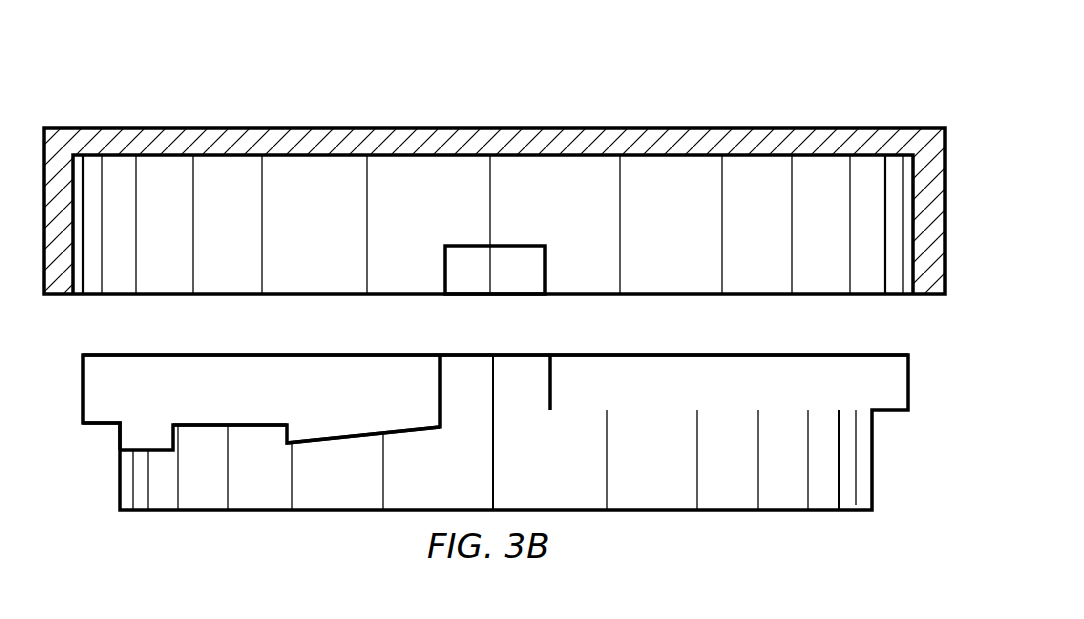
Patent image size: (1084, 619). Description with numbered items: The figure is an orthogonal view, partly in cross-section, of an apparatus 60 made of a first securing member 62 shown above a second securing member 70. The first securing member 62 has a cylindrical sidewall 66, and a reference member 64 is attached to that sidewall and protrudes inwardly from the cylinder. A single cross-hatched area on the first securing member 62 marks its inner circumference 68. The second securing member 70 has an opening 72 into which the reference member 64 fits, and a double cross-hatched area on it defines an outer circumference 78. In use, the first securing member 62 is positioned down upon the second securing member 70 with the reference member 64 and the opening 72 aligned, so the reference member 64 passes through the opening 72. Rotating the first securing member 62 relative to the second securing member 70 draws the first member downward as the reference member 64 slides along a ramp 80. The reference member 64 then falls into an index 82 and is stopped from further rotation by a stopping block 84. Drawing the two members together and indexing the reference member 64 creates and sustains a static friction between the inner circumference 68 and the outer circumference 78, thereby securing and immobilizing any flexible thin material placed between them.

The apparatus 60 is at (729, 532).
The first securing member 62 is at (658, 116).
The reference member 64 is at (492, 248).
The cylindrical sidewall 66 is at (232, 190).
The inner circumference 68 is at (95, 162).
The second securing member 70 is at (888, 435).
The opening 72 is at (495, 365).
The outer circumference 78 is at (98, 357).
The ramp 80 is at (357, 437).
The index 82 is at (215, 432).
The stopping block 84 is at (122, 433).